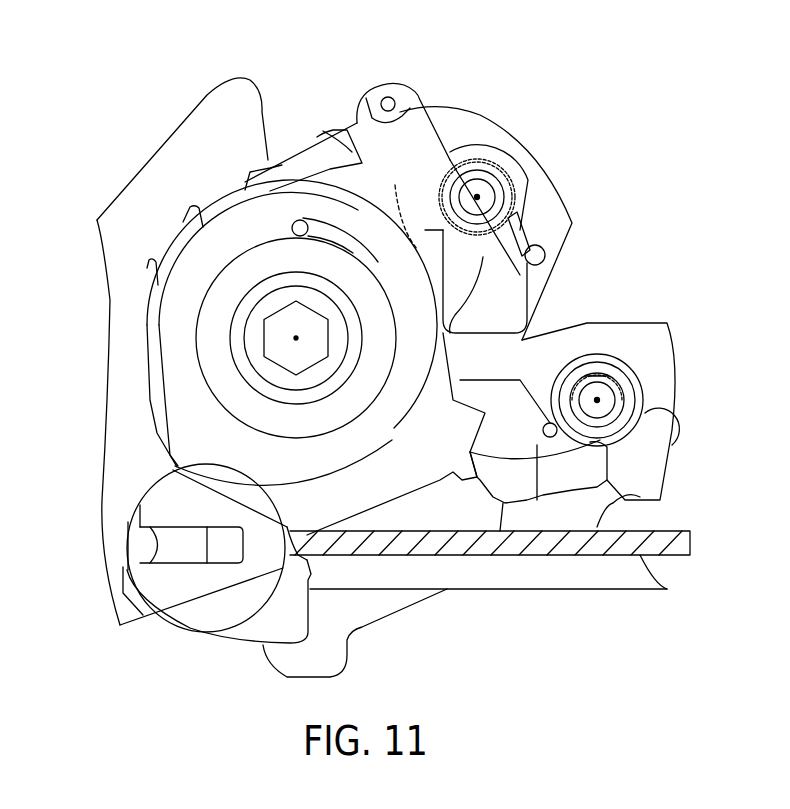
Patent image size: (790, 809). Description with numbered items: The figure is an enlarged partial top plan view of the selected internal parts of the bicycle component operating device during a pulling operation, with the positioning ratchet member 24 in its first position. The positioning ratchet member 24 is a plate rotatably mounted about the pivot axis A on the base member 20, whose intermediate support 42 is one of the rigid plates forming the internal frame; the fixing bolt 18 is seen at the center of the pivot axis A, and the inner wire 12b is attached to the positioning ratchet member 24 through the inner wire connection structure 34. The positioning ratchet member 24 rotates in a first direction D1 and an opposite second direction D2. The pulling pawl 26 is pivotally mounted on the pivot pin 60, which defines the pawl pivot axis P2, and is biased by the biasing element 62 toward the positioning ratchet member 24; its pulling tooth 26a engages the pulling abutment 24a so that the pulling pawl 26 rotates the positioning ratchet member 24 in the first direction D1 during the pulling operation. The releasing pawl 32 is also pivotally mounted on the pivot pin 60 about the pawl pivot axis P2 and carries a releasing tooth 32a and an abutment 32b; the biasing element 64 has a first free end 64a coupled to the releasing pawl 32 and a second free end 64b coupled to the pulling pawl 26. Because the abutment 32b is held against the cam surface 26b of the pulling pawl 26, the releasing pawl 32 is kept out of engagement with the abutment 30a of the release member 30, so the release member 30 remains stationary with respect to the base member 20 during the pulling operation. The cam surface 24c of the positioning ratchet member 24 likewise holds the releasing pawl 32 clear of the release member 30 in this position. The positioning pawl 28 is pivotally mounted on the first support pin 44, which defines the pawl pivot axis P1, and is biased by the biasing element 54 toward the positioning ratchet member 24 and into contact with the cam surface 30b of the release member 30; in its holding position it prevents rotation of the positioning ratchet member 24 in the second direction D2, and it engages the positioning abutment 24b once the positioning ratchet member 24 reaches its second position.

The inner wire 12b is at (570, 560).
The fixing bolt 18 is at (330, 382).
The base member 20 is at (110, 200).
The positioning ratchet member 24 is at (436, 500).
The pulling abutment 24a is at (482, 280).
The positioning abutment 24b is at (503, 500).
The cam surface 24c is at (395, 185).
The pulling pawl 26 is at (548, 289).
The pulling tooth 26a is at (483, 335).
The cam surface 26b is at (368, 92).
The positioning pawl 28 is at (615, 470).
The release member 30 is at (540, 376).
The abutment 30a is at (247, 183).
The cam surface 30b is at (545, 467).
The releasing pawl 32 is at (425, 96).
The releasing tooth 32a is at (320, 152).
The abutment 32b is at (392, 97).
The inner wire connection structure 34 is at (221, 607).
The second or intermediate support 42 is at (137, 222).
The first support pin 44 is at (597, 380).
The biasing element 54 is at (635, 360).
The pivot pin 60 is at (500, 147).
The biasing element 62 is at (531, 226).
The biasing element 64 is at (413, 262).
The first free end 64a is at (485, 113).
The second free end 64b is at (480, 282).
The pivot axis A is at (296, 342).
The first direction D1 is at (412, 373).
The second direction D2 is at (178, 364).
The pawl pivot axis P1 is at (600, 400).
The pawl pivot axis P2 is at (480, 197).